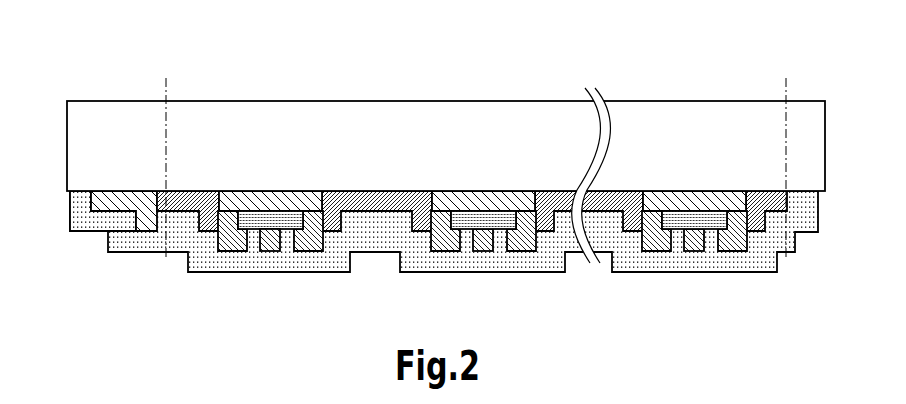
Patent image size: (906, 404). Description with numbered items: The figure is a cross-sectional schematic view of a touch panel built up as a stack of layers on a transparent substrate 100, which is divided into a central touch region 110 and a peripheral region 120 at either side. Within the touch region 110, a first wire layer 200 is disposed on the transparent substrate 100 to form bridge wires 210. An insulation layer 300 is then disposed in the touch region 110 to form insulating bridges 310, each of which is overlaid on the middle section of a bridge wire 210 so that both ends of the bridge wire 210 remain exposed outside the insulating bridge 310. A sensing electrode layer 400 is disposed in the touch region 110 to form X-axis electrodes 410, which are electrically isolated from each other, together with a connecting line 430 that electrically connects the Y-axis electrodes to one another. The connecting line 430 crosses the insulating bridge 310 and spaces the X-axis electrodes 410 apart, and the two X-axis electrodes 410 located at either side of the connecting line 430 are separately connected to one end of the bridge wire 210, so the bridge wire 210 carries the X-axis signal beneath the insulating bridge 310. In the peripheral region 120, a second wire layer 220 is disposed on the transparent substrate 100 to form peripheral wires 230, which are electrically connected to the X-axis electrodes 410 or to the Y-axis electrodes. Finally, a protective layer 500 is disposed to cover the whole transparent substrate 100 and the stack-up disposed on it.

The transparent substrate 100 is at (103, 152).
The touch region 110 is at (784, 68).
The peripheral region 120 is at (69, 68).
The first wire layer 200 is at (215, 236).
The bridge wire 210 is at (653, 214).
The second wire layer 220 is at (138, 243).
The peripheral wire 230 is at (107, 204).
The insulation layer 300 is at (240, 240).
The insulating bridge 310 is at (710, 230).
The sensing electrode layer 400 is at (739, 254).
The X-axis electrode 410 is at (373, 214).
The connecting line 430 is at (277, 247).
The protective layer 500 is at (503, 273).